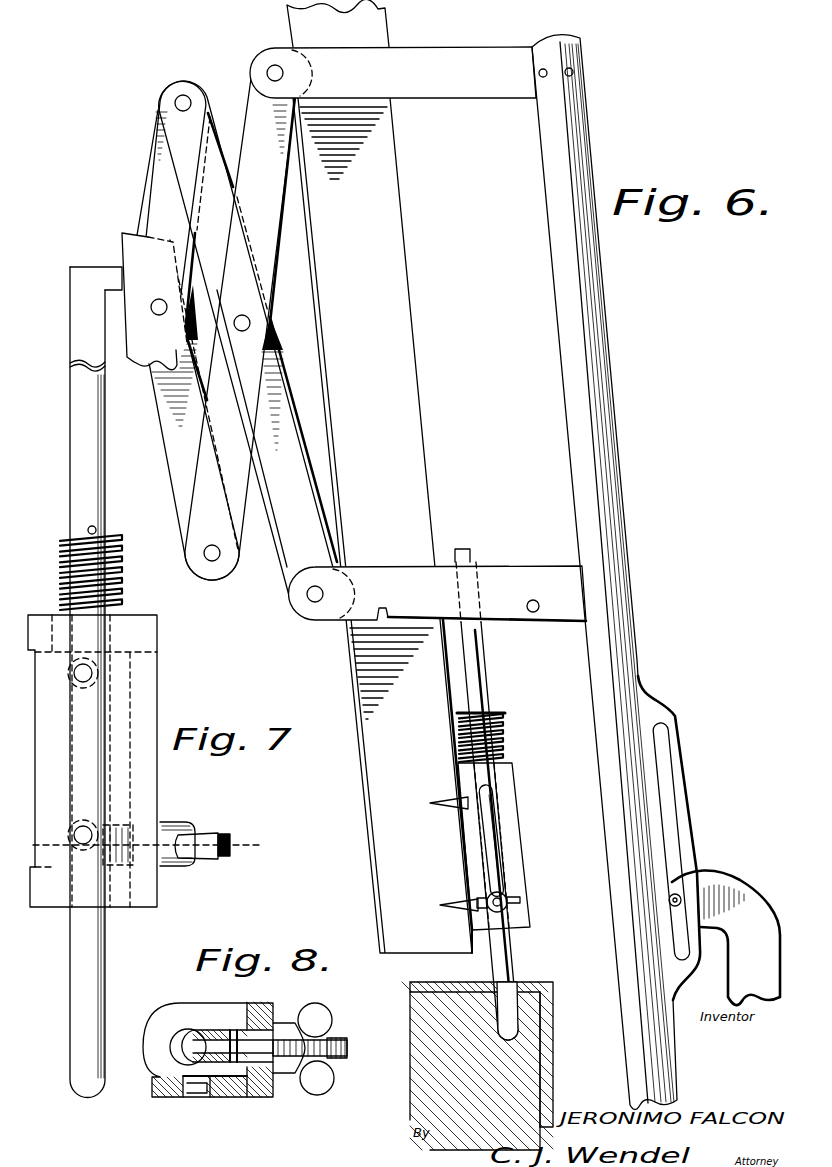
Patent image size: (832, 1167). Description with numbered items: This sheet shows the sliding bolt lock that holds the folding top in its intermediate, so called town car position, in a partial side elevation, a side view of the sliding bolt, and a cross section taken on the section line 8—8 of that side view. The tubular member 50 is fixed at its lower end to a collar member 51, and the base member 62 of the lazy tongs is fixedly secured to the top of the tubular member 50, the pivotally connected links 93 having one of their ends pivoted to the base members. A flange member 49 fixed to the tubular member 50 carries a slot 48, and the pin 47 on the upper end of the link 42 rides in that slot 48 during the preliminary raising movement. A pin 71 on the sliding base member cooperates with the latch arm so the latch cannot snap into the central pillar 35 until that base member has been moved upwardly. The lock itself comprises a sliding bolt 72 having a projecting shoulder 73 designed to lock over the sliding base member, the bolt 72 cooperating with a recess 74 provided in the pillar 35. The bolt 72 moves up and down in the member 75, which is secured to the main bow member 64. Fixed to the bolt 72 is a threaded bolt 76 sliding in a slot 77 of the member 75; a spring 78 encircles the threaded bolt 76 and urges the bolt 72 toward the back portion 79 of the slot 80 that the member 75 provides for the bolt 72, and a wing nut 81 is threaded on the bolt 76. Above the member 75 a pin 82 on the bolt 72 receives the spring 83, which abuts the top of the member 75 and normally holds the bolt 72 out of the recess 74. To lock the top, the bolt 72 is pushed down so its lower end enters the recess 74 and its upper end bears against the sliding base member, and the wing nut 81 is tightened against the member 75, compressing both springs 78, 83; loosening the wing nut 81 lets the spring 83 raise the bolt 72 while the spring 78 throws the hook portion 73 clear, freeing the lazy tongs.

In FIG. 6, the central pillar 35 is at (553, 1013).
In FIG. 6, the link 42 is at (730, 893).
In FIG. 6, the pin 47 is at (688, 885).
In FIG. 6, the slot 48 is at (663, 768).
In FIG. 6, the flange member 49 is at (665, 712).
In FIG. 6, the tubular member 50 is at (612, 493).
In FIG. 6, the collar member 51 is at (487, 570).
In FIG. 6, the base member 62 is at (393, 72).
In FIG. 6, the main bow member 64 is at (379, 476).
In FIG. 6, the pin 71 is at (535, 602).
In FIG. 6, the sliding bolt 72 is at (478, 645).
In FIG. 7, the sliding bolt 72 is at (70, 410).
In FIG. 8, the sliding bolt 72 is at (197, 1032).
In FIG. 6, the projecting shoulder 73 is at (462, 548).
In FIG. 7, the projecting shoulder 73 is at (115, 267).
In FIG. 6, the recess 74 is at (537, 982).
In FIG. 6, the member 75 is at (516, 830).
In FIG. 7, the member 75 is at (145, 640).
In FIG. 8, the member 75 is at (215, 1005).
In FIG. 6, the threaded bolt 76 is at (525, 907).
In FIG. 7, the threaded bolt 76 is at (228, 852).
In FIG. 8, the threaded bolt 76 is at (348, 1045).
In FIG. 6, the slot 77 is at (500, 803).
In FIG. 7, the spring 78 is at (140, 830).
In FIG. 8, the spring 78 is at (238, 1075).
In FIG. 8, the back portion 79 is at (172, 1060).
In FIG. 8, the slot 80 is at (180, 1040).
In FIG. 6, the wing nut 81 is at (508, 895).
In FIG. 7, the wing nut 81 is at (178, 832).
In FIG. 8, the wing nut 81 is at (322, 1015).
In FIG. 6, the pin 82 is at (497, 712).
In FIG. 7, the pin 82 is at (95, 528).
In FIG. 6, the spring 83 is at (505, 737).
In FIG. 7, the spring 83 is at (62, 548).
In FIG. 6, the pivotally connected links 93 is at (263, 228).
In FIG. 7, the section line 8 is at (145, 847).